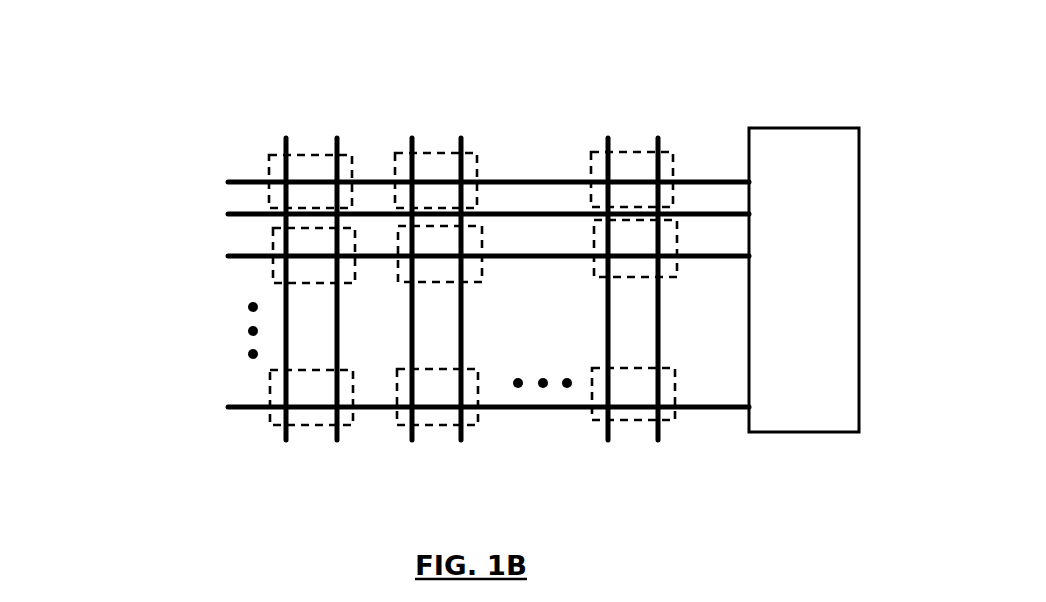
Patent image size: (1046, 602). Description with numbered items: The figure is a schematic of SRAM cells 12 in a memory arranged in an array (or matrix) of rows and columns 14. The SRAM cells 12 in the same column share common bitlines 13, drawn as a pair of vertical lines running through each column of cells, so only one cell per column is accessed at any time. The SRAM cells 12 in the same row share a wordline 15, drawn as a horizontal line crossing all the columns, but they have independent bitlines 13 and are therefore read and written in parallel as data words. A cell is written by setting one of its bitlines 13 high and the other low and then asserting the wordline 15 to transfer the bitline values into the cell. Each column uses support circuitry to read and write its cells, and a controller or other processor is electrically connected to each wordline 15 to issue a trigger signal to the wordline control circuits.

The SRAM cells 12 is at (435, 124).
The bitlines 13 is at (659, 118).
The array of rows and columns 14 is at (736, 94).
The wordline 15 is at (145, 180).